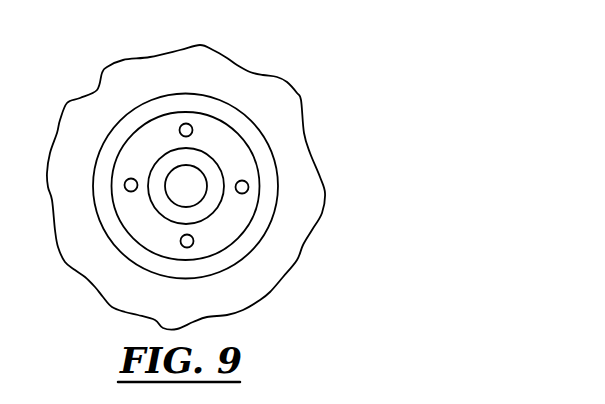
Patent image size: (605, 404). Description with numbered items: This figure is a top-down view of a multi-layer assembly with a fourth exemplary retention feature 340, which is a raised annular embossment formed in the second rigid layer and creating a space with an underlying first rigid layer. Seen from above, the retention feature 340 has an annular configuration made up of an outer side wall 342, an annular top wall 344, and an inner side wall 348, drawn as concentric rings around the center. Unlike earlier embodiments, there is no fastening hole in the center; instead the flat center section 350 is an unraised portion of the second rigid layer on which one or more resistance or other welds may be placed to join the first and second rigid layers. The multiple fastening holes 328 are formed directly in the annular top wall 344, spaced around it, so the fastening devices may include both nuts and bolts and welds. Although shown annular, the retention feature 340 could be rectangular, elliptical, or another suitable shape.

The fastening holes 328 is at (182, 127).
The retention feature 340 is at (258, 114).
The outer side wall 342 is at (193, 105).
The top wall 344 is at (146, 229).
The inner side wall 348 is at (217, 174).
The flat center section 350 is at (183, 193).